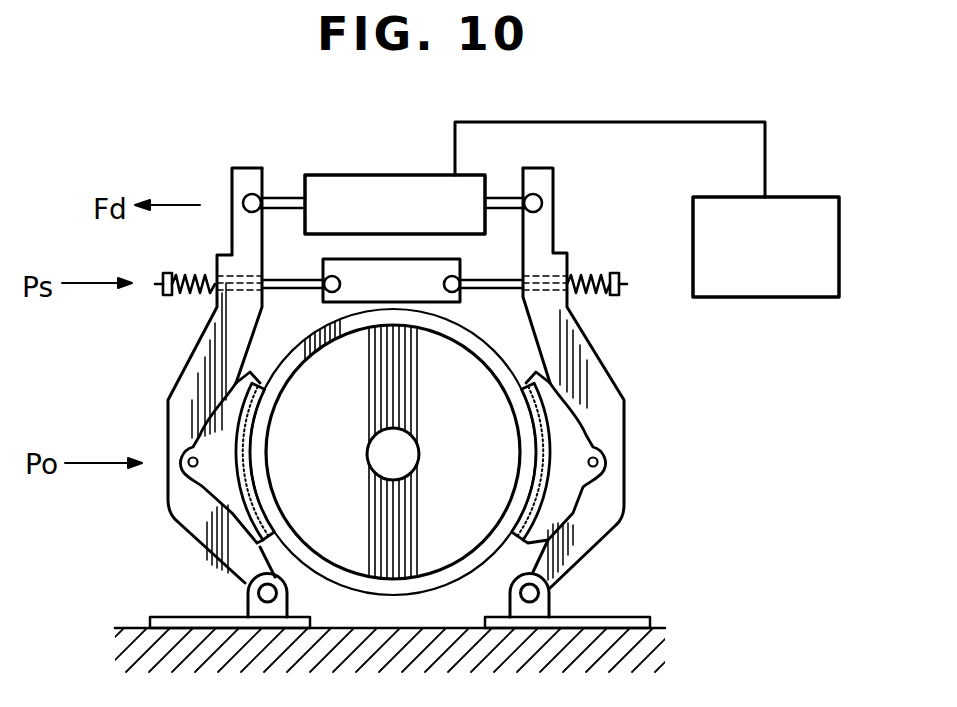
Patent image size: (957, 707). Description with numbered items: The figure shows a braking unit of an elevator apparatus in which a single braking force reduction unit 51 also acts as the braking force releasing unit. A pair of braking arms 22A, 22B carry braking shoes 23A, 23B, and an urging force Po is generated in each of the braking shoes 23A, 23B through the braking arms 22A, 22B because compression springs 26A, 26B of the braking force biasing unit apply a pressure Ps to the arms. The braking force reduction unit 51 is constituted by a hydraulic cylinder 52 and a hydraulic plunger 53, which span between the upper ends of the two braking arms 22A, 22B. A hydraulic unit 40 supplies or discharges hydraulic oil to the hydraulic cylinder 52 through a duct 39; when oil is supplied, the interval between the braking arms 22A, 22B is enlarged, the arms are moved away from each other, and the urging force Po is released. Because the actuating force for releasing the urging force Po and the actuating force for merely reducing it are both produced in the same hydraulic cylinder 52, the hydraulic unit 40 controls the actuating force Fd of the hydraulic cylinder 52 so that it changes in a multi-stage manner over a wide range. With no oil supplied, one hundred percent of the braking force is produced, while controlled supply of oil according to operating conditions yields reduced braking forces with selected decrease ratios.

The braking arm 22A is at (577, 553).
The braking arm 22B is at (208, 550).
The braking shoe 23A is at (578, 480).
The braking shoe 23B is at (218, 497).
The compression spring 26A is at (600, 298).
The compression spring 26B is at (193, 298).
The duct 39 is at (592, 122).
The hydraulic unit 40 is at (814, 297).
The braking force reduction unit 51 is at (392, 154).
The hydraulic cylinder 52 is at (390, 175).
The hydraulic plunger 53 is at (423, 126).